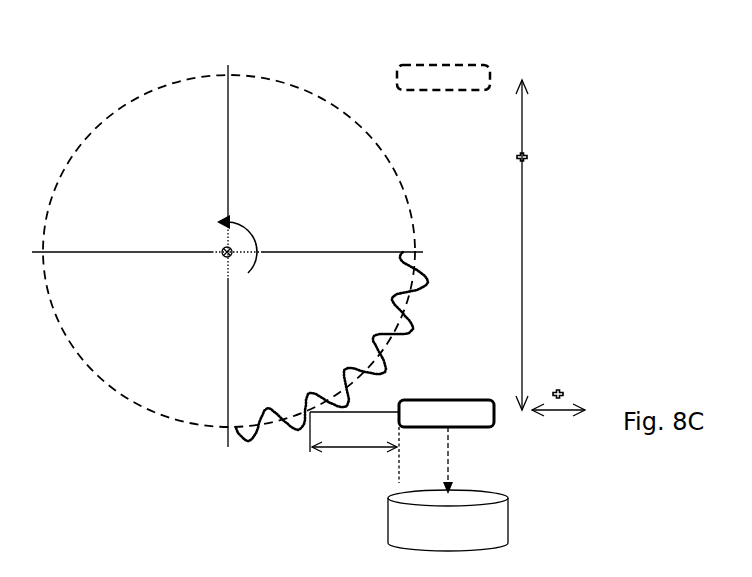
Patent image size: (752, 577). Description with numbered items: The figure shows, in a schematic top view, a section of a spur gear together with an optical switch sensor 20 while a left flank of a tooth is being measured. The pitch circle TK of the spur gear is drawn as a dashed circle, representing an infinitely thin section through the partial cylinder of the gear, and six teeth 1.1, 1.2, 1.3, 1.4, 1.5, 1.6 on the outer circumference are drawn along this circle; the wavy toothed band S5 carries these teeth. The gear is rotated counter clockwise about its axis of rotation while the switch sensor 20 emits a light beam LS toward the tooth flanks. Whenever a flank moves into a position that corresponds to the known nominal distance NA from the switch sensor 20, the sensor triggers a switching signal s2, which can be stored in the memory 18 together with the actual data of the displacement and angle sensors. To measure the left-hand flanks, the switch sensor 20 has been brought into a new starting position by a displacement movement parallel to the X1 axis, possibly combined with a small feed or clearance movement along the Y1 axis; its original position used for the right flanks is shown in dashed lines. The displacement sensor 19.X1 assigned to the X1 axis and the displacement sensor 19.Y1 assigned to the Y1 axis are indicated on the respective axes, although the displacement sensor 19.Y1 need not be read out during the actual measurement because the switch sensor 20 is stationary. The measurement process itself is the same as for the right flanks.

The pitch circle TK is at (70, 156).
The rotation axis RA is at (206, 241).
The structure / surface pattern segment S5 is at (331, 346).
The tooth 1.1 is at (399, 276).
The tooth 1.2 is at (387, 317).
The tooth 1.3 is at (363, 353).
The tooth 1.4 is at (330, 383).
The tooth 1.5 is at (291, 403).
The tooth 1.6 is at (247, 413).
The light beam LS is at (378, 411).
The optical switch sensor 20 is at (452, 65).
The nominal distance NA is at (354, 447).
The switching signal s2 is at (461, 460).
The memory 18 is at (448, 520).
The X1 axis X1 is at (523, 243).
The displacement sensor 19.X1 is at (527, 153).
The Y1 axis Y1 is at (558, 414).
The displacement sensor 19.Y1 is at (560, 388).